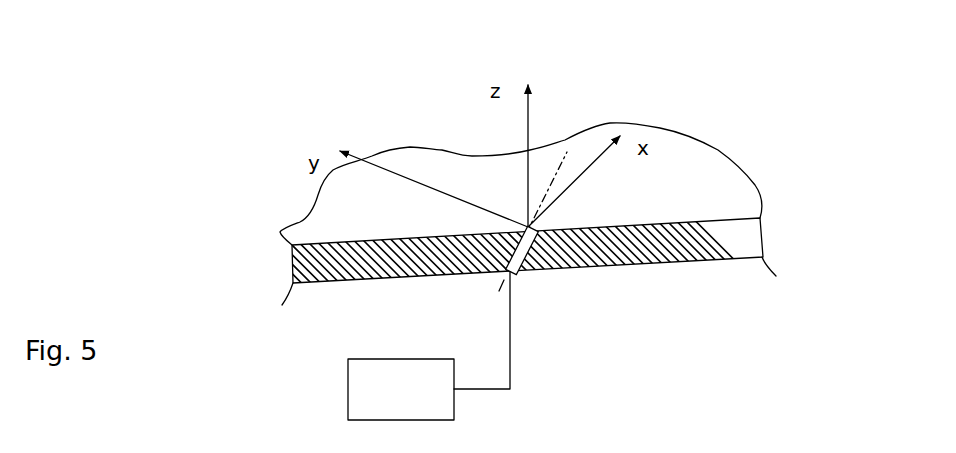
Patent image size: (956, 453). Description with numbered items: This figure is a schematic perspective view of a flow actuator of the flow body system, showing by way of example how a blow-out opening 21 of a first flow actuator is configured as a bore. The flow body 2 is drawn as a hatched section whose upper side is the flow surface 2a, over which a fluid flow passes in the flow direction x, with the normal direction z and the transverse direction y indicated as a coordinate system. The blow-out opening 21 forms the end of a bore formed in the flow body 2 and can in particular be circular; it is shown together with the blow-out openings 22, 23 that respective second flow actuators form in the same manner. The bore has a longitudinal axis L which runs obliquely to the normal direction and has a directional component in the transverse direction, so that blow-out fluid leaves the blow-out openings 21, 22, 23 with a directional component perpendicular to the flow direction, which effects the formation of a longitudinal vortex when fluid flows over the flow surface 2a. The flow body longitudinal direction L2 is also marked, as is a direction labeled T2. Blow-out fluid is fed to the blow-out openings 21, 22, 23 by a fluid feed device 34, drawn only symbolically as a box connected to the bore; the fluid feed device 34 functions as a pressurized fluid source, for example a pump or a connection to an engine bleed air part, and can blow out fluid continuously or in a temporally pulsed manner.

The flow body 2 is at (761, 235).
The flow surface 2a is at (737, 179).
The longitudinal axis L is at (562, 146).
The flow body longitudinal direction L2 is at (358, 203).
The translation direction T2 is at (607, 205).
The blow-out opening 21 is at (566, 307).
The blow-out opening 22 is at (566, 307).
The blow-out opening 23 is at (528, 281).
The fluid feed device 34 is at (401, 389).